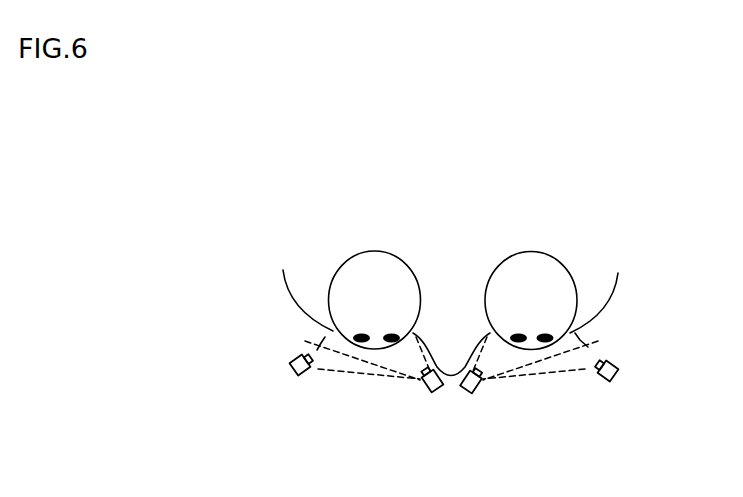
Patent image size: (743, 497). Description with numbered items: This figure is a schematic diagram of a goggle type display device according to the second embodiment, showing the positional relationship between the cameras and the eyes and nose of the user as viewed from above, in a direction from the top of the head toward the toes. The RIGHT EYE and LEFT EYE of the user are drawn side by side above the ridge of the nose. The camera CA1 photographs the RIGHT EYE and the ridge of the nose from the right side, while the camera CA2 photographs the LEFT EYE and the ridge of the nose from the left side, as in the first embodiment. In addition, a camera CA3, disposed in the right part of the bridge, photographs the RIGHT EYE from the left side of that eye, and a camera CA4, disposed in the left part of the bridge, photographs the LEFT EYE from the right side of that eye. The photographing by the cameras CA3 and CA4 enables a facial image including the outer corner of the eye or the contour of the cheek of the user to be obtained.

The camera CA1 is at (294, 373).
The camera CA2 is at (618, 373).
The camera CA3 is at (431, 392).
The camera CA4 is at (472, 392).
The right eye RIGHT EYE is at (377, 252).
The left eye LEFT EYE is at (532, 252).